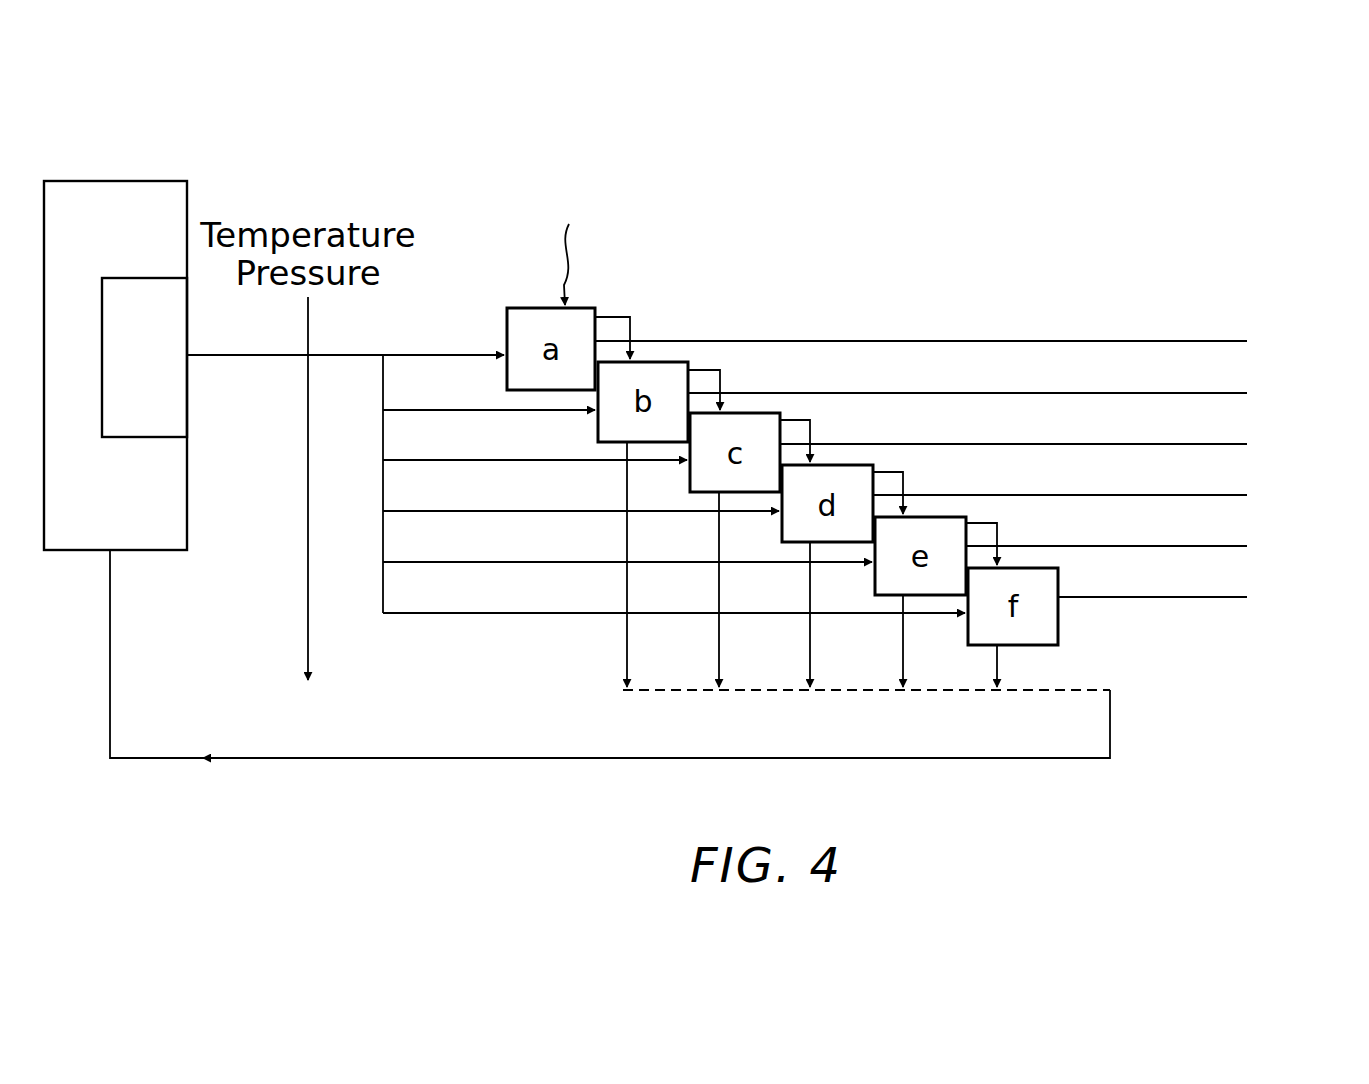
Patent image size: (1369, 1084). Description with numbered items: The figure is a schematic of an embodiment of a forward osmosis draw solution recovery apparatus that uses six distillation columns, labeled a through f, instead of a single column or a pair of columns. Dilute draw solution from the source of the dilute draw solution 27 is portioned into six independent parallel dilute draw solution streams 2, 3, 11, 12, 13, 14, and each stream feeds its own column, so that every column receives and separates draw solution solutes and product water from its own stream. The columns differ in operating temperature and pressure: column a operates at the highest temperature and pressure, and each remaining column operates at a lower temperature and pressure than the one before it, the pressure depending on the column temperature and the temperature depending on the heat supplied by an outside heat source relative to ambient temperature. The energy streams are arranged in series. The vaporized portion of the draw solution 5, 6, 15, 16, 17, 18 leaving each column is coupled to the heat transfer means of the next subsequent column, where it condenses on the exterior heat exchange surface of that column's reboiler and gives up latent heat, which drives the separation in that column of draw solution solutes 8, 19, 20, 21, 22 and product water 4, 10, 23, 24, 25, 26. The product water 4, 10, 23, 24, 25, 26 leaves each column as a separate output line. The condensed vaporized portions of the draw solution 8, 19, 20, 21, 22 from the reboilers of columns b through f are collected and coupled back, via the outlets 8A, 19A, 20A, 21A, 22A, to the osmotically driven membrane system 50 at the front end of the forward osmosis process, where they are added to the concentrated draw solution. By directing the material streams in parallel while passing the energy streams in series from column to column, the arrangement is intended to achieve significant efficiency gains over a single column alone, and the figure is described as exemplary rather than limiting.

The osmotically driven membrane system 50 is at (166, 181).
The source of the dilute draw solution 27 is at (166, 373).
The dilute draw solution stream 2 is at (436, 354).
The dilute draw solution stream 3 is at (482, 409).
The dilute draw solution stream 11 is at (514, 459).
The dilute draw solution stream 12 is at (506, 511).
The dilute draw solution stream 13 is at (514, 562).
The dilute draw solution stream 14 is at (500, 613).
The vaporized portion of the draw solution 5 is at (563, 242).
The vaporized portion of the draw solution 6 is at (618, 316).
The product water 4 is at (1226, 340).
The product water 10 is at (1232, 393).
The vaporized portion of the draw solution 15 is at (720, 370).
The vaporized portion of the draw solution 16 is at (808, 421).
The vaporized portion of the draw solution 17 is at (903, 472).
The vaporized portion of the draw solution 18 is at (997, 523).
The product water 23 is at (1240, 444).
The product water 24 is at (1240, 495).
The product water 25 is at (1240, 546).
The product water 26 is at (1216, 598).
The draw solution solutes 8 is at (625, 588).
The draw solution solutes 19 is at (717, 613).
The draw solution solutes 20 is at (809, 638).
The draw solution solutes 21 is at (904, 664).
The draw solution solutes 22 is at (996, 689).
The outlet 8A is at (624, 446).
The outlet 19A is at (716, 497).
The outlet 20A is at (807, 547).
The outlet 21A is at (902, 600).
The outlet 22A is at (1010, 650).